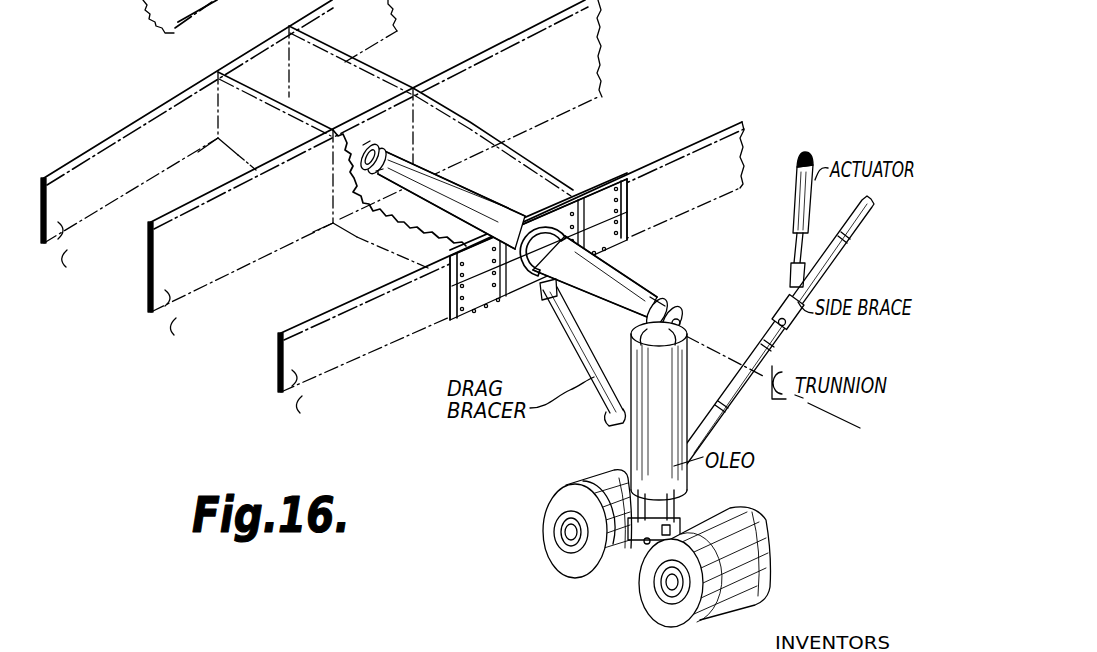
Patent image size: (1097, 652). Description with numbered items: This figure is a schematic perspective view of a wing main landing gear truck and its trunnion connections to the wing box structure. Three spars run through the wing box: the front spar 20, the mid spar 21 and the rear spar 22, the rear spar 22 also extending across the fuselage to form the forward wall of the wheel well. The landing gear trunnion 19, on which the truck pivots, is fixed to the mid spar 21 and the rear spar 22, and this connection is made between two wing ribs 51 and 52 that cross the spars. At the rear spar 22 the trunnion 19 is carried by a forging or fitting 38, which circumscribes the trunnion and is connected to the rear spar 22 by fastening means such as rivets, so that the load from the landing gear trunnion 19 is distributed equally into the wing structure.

The trunnion 19 is at (621, 279).
The front spar 20 is at (184, 143).
The mid spar 21 is at (242, 241).
The rear spar 22 is at (394, 330).
The forging or fitting 38 is at (586, 181).
The wing rib 51 is at (275, 143).
The wing rib 52 is at (348, 100).